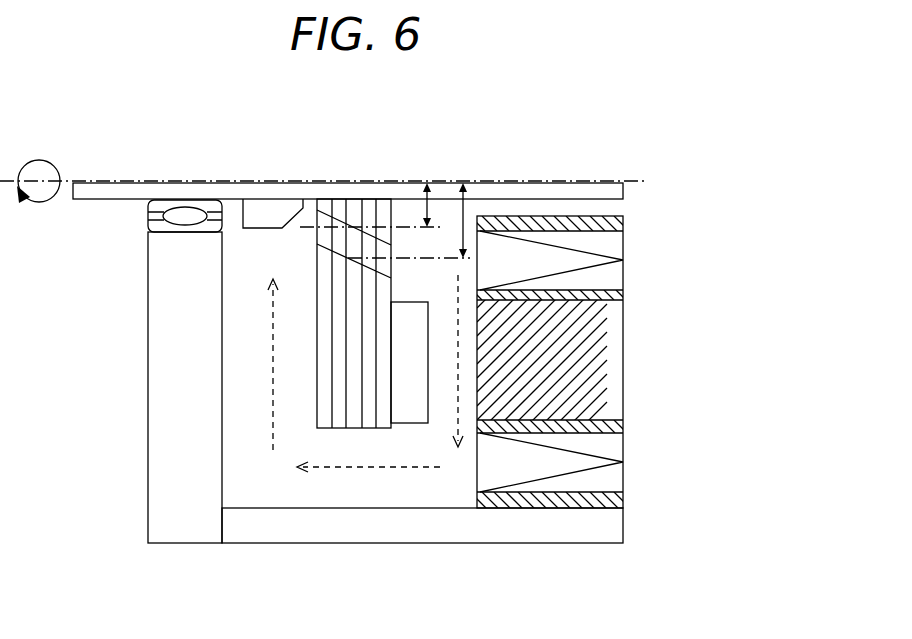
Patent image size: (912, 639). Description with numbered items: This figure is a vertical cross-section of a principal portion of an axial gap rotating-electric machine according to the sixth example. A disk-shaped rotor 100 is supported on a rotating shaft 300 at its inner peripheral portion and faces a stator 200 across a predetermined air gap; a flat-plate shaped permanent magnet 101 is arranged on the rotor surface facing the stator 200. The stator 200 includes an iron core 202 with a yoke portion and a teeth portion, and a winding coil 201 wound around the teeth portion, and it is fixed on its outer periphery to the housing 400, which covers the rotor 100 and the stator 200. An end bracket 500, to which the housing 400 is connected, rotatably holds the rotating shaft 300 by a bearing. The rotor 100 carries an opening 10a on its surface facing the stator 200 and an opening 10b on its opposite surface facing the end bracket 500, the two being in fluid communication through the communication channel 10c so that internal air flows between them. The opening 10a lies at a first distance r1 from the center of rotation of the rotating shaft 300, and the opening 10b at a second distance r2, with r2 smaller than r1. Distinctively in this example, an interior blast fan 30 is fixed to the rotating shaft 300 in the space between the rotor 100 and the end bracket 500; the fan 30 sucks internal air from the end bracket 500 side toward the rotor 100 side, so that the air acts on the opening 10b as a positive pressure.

The interior blast fan 30 is at (262, 208).
The opening 10a is at (393, 250).
The opening 10b is at (317, 199).
The communication channel 10c is at (350, 240).
The rotor 100 is at (355, 354).
The permanent magnet 101 is at (405, 415).
The stator 200 is at (603, 355).
The winding coil 201 is at (608, 278).
The iron core 202 is at (608, 347).
The rotating shaft 300 is at (587, 188).
The housing 400 is at (535, 543).
The end bracket 500 is at (144, 363).
The first distance r1 is at (464, 176).
The second distance r2 is at (428, 176).